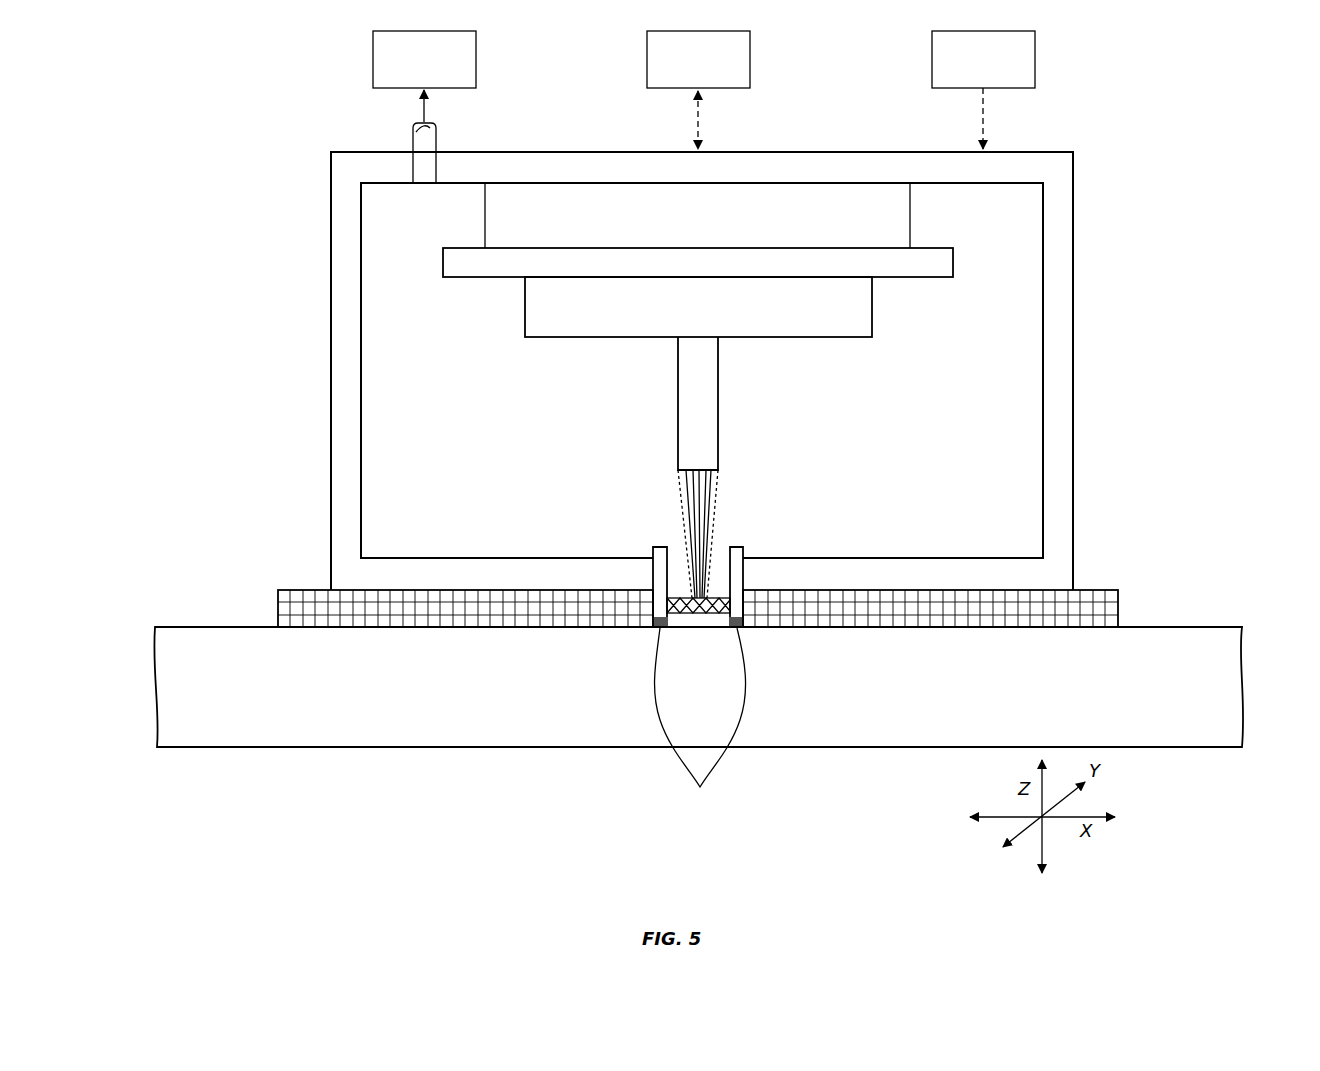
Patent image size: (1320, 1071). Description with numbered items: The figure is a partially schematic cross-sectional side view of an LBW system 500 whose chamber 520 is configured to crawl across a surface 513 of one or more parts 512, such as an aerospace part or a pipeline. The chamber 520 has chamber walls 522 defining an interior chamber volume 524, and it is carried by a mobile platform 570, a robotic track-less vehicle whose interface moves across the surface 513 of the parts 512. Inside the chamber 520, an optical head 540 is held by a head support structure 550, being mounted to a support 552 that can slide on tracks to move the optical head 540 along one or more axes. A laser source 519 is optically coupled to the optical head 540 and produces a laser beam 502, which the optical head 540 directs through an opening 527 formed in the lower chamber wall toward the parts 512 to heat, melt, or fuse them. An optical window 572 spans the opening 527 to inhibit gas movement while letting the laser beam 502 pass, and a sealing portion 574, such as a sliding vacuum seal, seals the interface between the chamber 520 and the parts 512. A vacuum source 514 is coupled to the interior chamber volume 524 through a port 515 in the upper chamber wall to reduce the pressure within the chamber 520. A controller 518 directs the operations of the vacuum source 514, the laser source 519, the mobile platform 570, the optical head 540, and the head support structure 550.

The LBW system 500 is at (236, 136).
The laser beam 502 is at (708, 479).
The parts 512 is at (698, 687).
The surface 513 is at (1172, 625).
The vacuum source 514 is at (424, 59).
The port 515 is at (437, 125).
The controller 518 is at (698, 90).
The laser source 519 is at (983, 90).
The chamber 520 is at (1063, 328).
The chamber walls 522 is at (1016, 168).
The interior chamber volume 524 is at (405, 484).
The opening 527 is at (672, 545).
The optical head 540 is at (705, 403).
The head support structure 550 is at (484, 306).
The support 552 is at (698, 307).
The mobile platform 570 is at (285, 607).
The optical window 572 is at (712, 597).
The sealing portion 574 is at (700, 722).